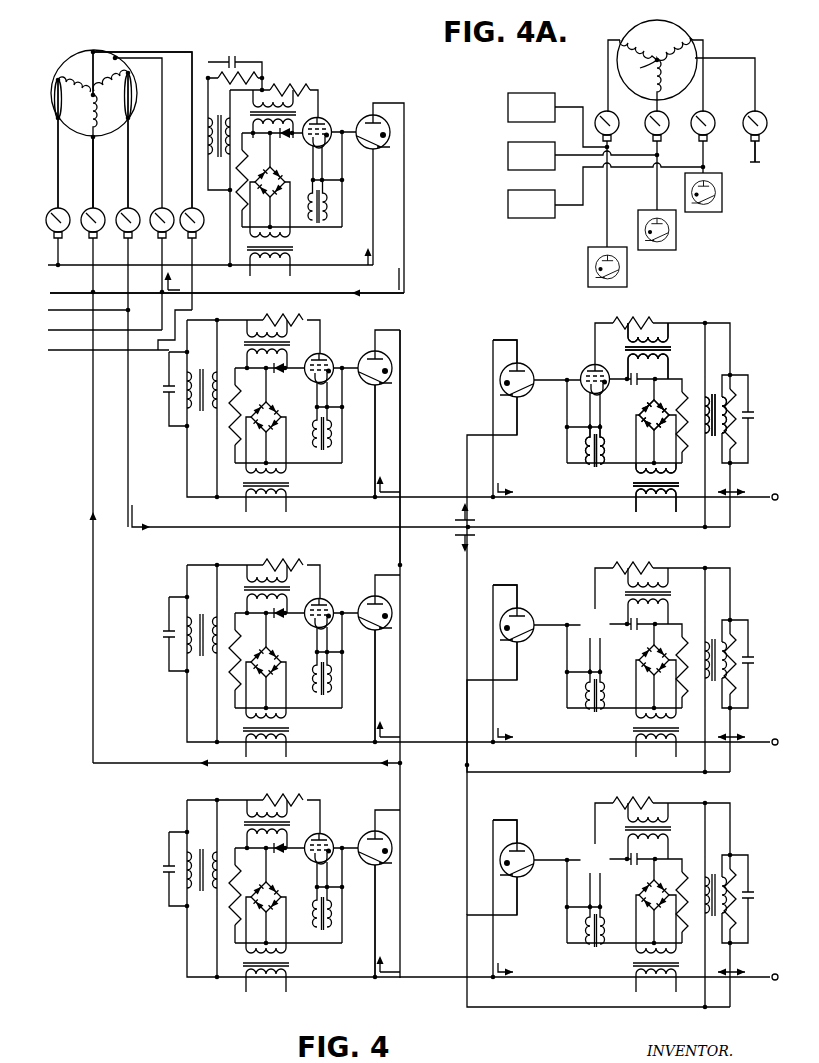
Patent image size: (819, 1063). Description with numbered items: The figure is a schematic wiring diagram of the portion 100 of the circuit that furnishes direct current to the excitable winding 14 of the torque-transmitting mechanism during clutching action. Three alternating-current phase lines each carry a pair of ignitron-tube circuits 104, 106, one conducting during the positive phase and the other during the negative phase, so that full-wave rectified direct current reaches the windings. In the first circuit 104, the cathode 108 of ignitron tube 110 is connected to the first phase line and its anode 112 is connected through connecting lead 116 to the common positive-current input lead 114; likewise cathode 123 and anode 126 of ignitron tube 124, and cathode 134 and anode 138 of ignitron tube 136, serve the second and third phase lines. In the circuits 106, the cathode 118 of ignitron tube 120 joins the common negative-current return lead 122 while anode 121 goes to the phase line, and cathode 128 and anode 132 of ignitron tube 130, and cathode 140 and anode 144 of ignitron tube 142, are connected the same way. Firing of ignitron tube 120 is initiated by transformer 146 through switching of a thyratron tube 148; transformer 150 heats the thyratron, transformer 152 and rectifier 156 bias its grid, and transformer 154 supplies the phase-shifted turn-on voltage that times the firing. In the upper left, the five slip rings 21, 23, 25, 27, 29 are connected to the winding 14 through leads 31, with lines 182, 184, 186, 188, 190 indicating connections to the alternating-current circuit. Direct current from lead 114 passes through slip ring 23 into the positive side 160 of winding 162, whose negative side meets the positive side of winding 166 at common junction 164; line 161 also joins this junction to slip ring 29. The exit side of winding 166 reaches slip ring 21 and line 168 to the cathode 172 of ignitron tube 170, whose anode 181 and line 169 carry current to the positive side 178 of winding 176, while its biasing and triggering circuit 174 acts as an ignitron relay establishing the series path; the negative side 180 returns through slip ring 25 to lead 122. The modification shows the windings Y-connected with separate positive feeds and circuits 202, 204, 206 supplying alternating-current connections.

In FIG. 4, the excitable winding 14 is at (60, 66).
In FIG. 4, the line 161 is at (86, 53).
In FIG. 4, the excitable winding 166 is at (57, 78).
In FIG. 4A, the excitable winding 166 is at (620, 40).
In FIG. 4, the common junction 164 is at (56, 105).
In FIG. 4A, the common junction 164 is at (640, 68).
In FIG. 4, the excitable winding 176 is at (115, 58).
In FIG. 4A, the excitable winding 176 is at (682, 40).
In FIG. 4, the positive side of winding 176 178 is at (128, 70).
In FIG. 4, the negative side of winding 176 180 is at (160, 50).
In FIG. 4, the excitable winding 162 is at (96, 126).
In FIG. 4A, the excitable winding 162 is at (655, 78).
In FIG. 4, the positive side of winding 162 160 is at (92, 140).
In FIG. 4, the leads 31 is at (192, 166).
In FIG. 4, the slip ring 21 is at (47, 215).
In FIG. 4A, the slip ring 21 is at (612, 118).
In FIG. 4, the slip ring 23 is at (88, 221).
In FIG. 4A, the slip ring 23 is at (663, 117).
In FIG. 4, the slip ring 25 is at (126, 221).
In FIG. 4A, the slip ring 25 is at (711, 117).
In FIG. 4, the slip ring 27 is at (156, 210).
In FIG. 4A, the slip ring 27 is at (760, 117).
In FIG. 4, the slip ring 29 is at (188, 210).
In FIG. 4, the line 182 is at (50, 265).
In FIG. 4A, the line 182 is at (583, 110).
In FIG. 4, the line 184 is at (50, 293).
In FIG. 4A, the line 184 is at (572, 154).
In FIG. 4, the line 186 is at (50, 310).
In FIG. 4A, the line 186 is at (578, 207).
In FIG. 4, the line 188 is at (50, 330).
In FIG. 4, the line 190 is at (50, 350).
In FIG. 4, the portion of circuit 100 is at (301, 37).
In FIG. 4, the anode of ignitron tube 170 181 is at (371, 114).
In FIG. 4, the ignitron tube 170 is at (390, 111).
In FIG. 4, the cathode of ignitron tube 170 172 is at (390, 148).
In FIG. 4, the biasing and triggering circuit 174 is at (358, 262).
In FIG. 4, the line 168 is at (282, 252).
In FIG. 4, the line 169 is at (286, 293).
In FIG. 4, the ignitron-tube circuit 104 is at (367, 489).
In FIG. 4, the anode of ignitron tube 110 112 is at (356, 350).
In FIG. 4, the ignitron tube 110 is at (393, 360).
In FIG. 4A, the ignitron tube 110 is at (627, 268).
In FIG. 4, the cathode of ignitron tube 110 108 is at (390, 386).
In FIG. 4, the connecting lead 116 is at (403, 442).
In FIG. 4, the anode of ignitron tube 124 126 is at (354, 596).
In FIG. 4, the ignitron tube 124 is at (393, 604).
In FIG. 4A, the ignitron tube 124 is at (676, 231).
In FIG. 4, the cathode of ignitron tube 124 123 is at (390, 630).
In FIG. 4, the anode of ignitron tube 136 138 is at (354, 833).
In FIG. 4, the ignitron tube 136 is at (393, 840).
In FIG. 4A, the ignitron tube 136 is at (722, 193).
In FIG. 4, the cathode of ignitron tube 136 134 is at (388, 864).
In FIG. 4, the ignitron-tube circuit 106 is at (556, 482).
In FIG. 4, the anode of ignitron tube 120 121 is at (516, 354).
In FIG. 4, the ignitron tube 120 is at (530, 364).
In FIG. 4, the cathode of ignitron tube 120 118 is at (520, 397).
In FIG. 4, the thyratron tube 148 is at (590, 364).
In FIG. 4, the transformer 154 is at (660, 352).
In FIG. 4, the rectifier 156 is at (660, 401).
In FIG. 4, the transformer 146 is at (710, 397).
In FIG. 4, the transformer 150 is at (592, 460).
In FIG. 4, the transformer 152 is at (658, 486).
In FIG. 4, the anode of ignitron tube 130 132 is at (516, 600).
In FIG. 4, the ignitron tube 130 is at (530, 609).
In FIG. 4, the cathode of ignitron tube 130 128 is at (522, 639).
In FIG. 4, the anode of ignitron tube 142 144 is at (520, 840).
In FIG. 4, the ignitron tube 142 is at (531, 846).
In FIG. 4, the cathode of ignitron tube 142 140 is at (520, 876).
In FIG. 4, the common negative-current return lead 122 is at (224, 526).
In FIG. 4A, the common negative-current return lead 122 is at (750, 158).
In FIG. 4, the common positive-current input lead 114 is at (128, 768).
In FIG. 4A, the circuit 202 is at (548, 119).
In FIG. 4A, the circuit 204 is at (548, 167).
In FIG. 4A, the circuit 206 is at (548, 215).